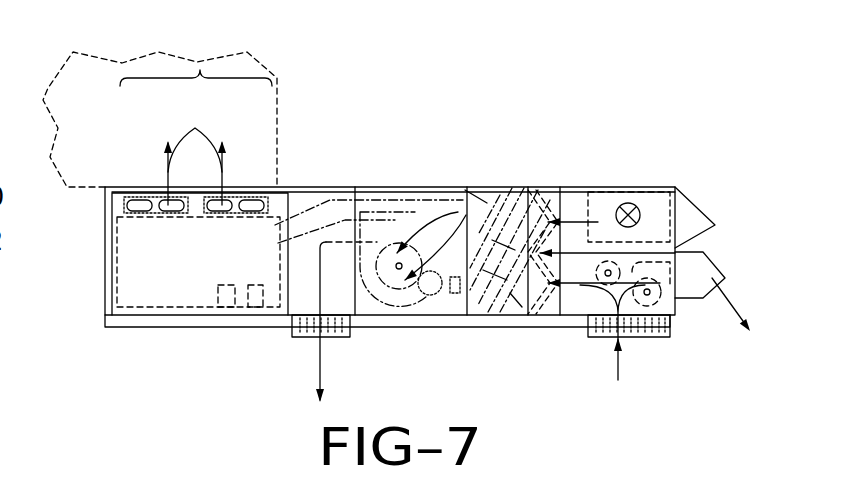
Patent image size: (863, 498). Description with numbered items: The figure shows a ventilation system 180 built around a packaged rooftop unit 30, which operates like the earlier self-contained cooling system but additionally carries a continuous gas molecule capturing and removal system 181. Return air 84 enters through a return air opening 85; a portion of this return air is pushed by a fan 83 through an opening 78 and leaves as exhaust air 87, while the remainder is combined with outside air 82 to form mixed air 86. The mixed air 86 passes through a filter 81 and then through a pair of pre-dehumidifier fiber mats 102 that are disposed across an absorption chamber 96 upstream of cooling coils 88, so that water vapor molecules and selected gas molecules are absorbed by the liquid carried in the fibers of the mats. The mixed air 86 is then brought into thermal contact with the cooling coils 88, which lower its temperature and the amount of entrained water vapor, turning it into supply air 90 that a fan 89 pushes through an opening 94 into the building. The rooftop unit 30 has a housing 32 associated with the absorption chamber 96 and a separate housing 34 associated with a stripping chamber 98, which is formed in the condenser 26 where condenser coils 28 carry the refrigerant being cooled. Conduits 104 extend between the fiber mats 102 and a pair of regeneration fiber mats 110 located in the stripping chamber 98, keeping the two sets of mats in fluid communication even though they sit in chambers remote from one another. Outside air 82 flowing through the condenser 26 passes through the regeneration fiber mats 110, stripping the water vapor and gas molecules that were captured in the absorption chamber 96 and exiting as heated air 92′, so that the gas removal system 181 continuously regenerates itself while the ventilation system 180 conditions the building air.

The condenser 26 is at (200, 70).
The condenser coils 28 is at (115, 258).
The rooftop unit 30 is at (298, 187).
The housing 32 is at (428, 187).
The housing 34 is at (105, 297).
The opening 78 is at (724, 280).
The filter 81 is at (553, 183).
The outside air 82 is at (607, 198).
The fan 83 is at (686, 303).
The return air 84 is at (620, 362).
The return air opening 85 is at (662, 338).
The mixed air 86 is at (600, 250).
The exhaust air 87 is at (745, 325).
The cooling coils 88 is at (503, 195).
The fan 89 is at (382, 303).
The supply air 90 is at (318, 372).
The heated air 92′ is at (213, 93).
The opening 94 is at (292, 335).
The absorption chamber 96 is at (485, 203).
The stripping chamber 98 is at (147, 288).
The pre-dehumidifier fiber mats 102 is at (537, 195).
The conduits 104 is at (378, 189).
The regeneration fiber mats 110 is at (187, 300).
The ventilation system 180 is at (708, 153).
The gas removal system 181 is at (440, 113).